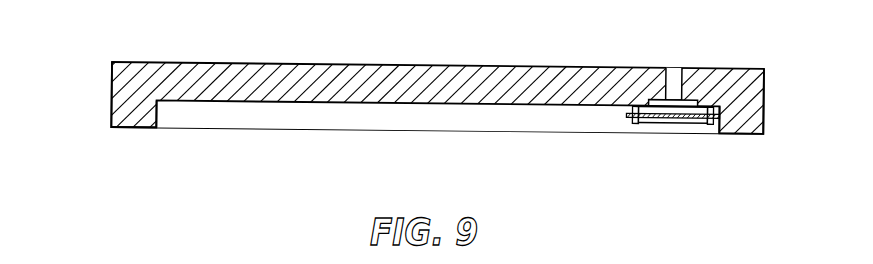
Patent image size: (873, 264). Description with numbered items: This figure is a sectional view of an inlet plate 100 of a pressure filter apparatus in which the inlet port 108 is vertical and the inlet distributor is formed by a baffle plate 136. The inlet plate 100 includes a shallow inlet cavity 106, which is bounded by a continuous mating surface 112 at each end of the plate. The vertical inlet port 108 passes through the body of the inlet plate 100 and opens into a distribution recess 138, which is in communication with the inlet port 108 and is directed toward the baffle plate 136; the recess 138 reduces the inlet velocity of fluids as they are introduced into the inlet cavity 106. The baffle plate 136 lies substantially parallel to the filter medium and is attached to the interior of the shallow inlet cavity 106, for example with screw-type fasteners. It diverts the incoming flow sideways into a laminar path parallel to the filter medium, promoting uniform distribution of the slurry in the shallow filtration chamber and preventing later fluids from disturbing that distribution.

The inlet plate 100 is at (210, 63).
The shallow inlet cavity 106 is at (243, 102).
The inlet port 108 is at (673, 75).
The continuous mating surface 112 is at (140, 128).
The baffle plate 136 is at (653, 119).
The distribution recess 138 is at (652, 101).